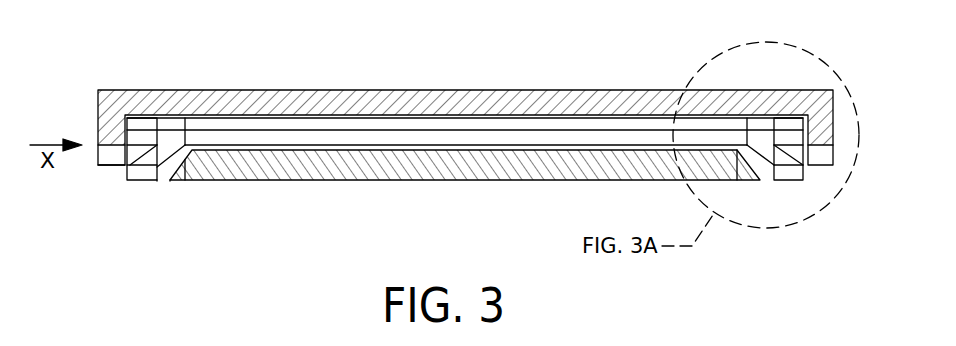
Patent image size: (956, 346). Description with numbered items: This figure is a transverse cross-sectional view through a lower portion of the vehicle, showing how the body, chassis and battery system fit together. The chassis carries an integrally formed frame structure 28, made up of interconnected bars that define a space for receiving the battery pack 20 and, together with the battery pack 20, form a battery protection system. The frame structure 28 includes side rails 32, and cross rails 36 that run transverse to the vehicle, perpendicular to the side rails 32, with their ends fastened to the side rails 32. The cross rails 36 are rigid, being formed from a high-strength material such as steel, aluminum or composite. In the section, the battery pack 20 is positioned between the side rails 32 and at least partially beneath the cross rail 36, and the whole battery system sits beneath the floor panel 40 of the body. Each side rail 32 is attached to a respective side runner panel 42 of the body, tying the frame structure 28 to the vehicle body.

The battery pack 20 is at (445, 180).
The frame structure 28 is at (140, 200).
The side rail 32 is at (135, 172).
The cross rail 36 is at (282, 135).
The floor panel 40 is at (430, 103).
The side runner panel 42 is at (112, 157).